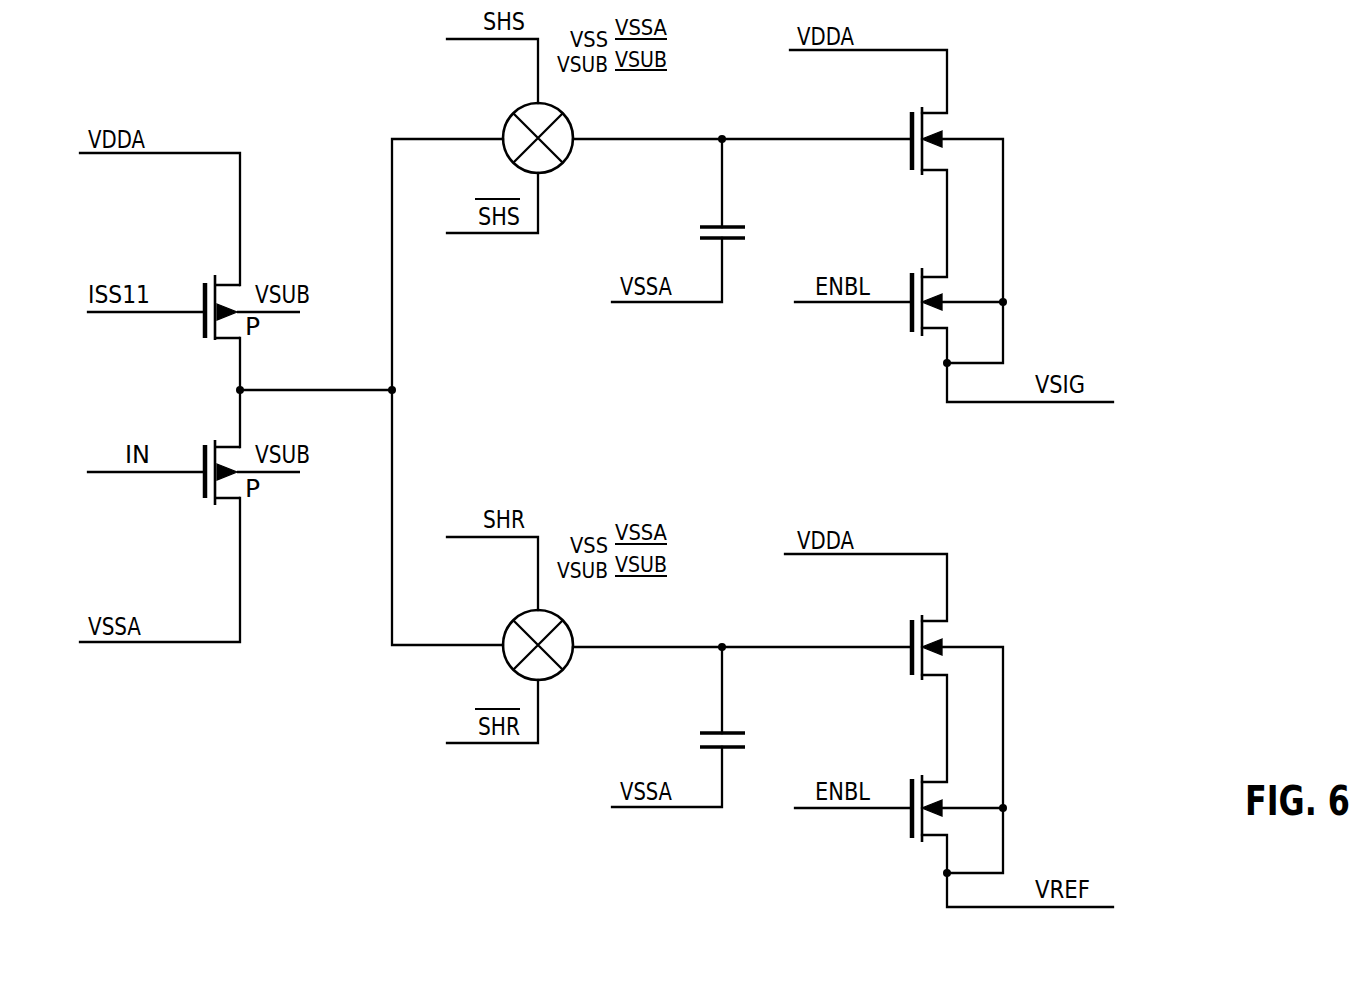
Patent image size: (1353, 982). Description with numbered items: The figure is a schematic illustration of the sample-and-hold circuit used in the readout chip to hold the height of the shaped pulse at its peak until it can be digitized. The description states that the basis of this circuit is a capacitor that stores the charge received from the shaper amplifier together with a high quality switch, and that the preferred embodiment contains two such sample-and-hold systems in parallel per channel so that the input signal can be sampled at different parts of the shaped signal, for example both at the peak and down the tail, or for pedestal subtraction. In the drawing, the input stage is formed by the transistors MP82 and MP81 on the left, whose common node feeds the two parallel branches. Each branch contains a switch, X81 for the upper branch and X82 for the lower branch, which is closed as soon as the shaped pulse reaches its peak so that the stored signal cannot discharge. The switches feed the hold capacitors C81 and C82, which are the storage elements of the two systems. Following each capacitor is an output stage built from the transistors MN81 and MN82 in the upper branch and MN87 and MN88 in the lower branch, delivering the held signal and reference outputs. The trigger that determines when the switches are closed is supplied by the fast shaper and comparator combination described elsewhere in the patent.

The P-channel transistor MP82 (current source) MP82 is at (235, 322).
The P-channel transistor MP81 (input transistor) MP81 is at (235, 484).
The analog switch X81 (sample signal) X81 is at (529, 126).
The analog switch X82 (sample reference) X82 is at (529, 633).
The hold capacitor C81 (1p) C81 is at (734, 234).
The hold capacitor C82 (1p) C82 is at (734, 740).
The N-channel transistor MN81 (source follower) MN81 is at (924, 127).
The N-channel transistor MN82 (enable switch) MN82 is at (924, 288).
The N-channel transistor MN87 (source follower) MN87 is at (924, 634).
The N-channel transistor MN88 (enable switch) MN88 is at (924, 794).